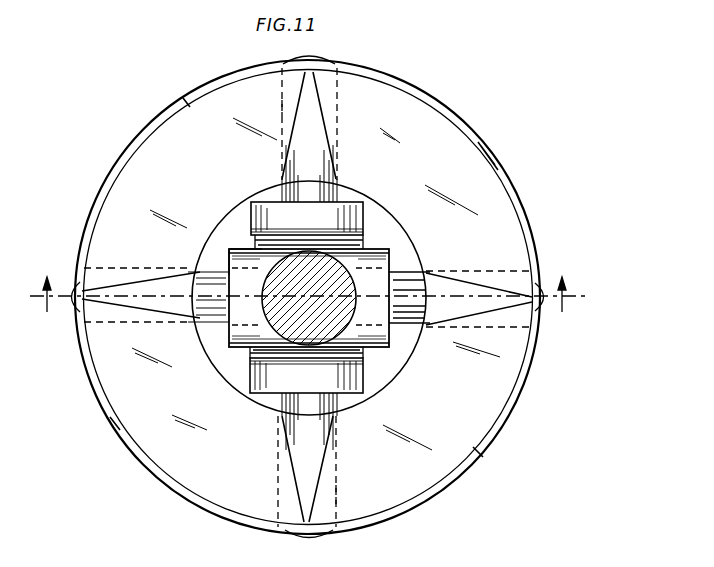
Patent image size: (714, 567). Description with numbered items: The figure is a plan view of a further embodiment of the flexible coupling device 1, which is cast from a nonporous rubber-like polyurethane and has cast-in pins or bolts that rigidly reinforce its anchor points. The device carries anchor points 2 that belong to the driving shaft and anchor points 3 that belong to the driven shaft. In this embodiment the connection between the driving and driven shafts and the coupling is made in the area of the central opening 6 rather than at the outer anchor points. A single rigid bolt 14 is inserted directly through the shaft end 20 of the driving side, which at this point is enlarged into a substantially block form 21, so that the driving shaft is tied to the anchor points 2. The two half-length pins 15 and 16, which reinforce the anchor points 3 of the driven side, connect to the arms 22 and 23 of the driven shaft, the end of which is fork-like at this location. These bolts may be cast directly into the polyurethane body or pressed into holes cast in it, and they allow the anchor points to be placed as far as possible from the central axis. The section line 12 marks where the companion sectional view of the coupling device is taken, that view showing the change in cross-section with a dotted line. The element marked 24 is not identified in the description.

The flexible coupling device 1 is at (512, 178).
The anchor points 2 is at (120, 288).
The anchor points 3 is at (310, 118).
The central opening 6 is at (399, 241).
The section line 12 is at (310, 281).
The bolt 14 is at (408, 313).
The half-length bolt 15 is at (282, 108).
The half-length bolt 16 is at (337, 496).
The shaft end 20 is at (263, 315).
The block form 21 is at (243, 252).
The arm 22 is at (342, 212).
The arm 23 is at (355, 398).
The hub body 24 is at (247, 352).